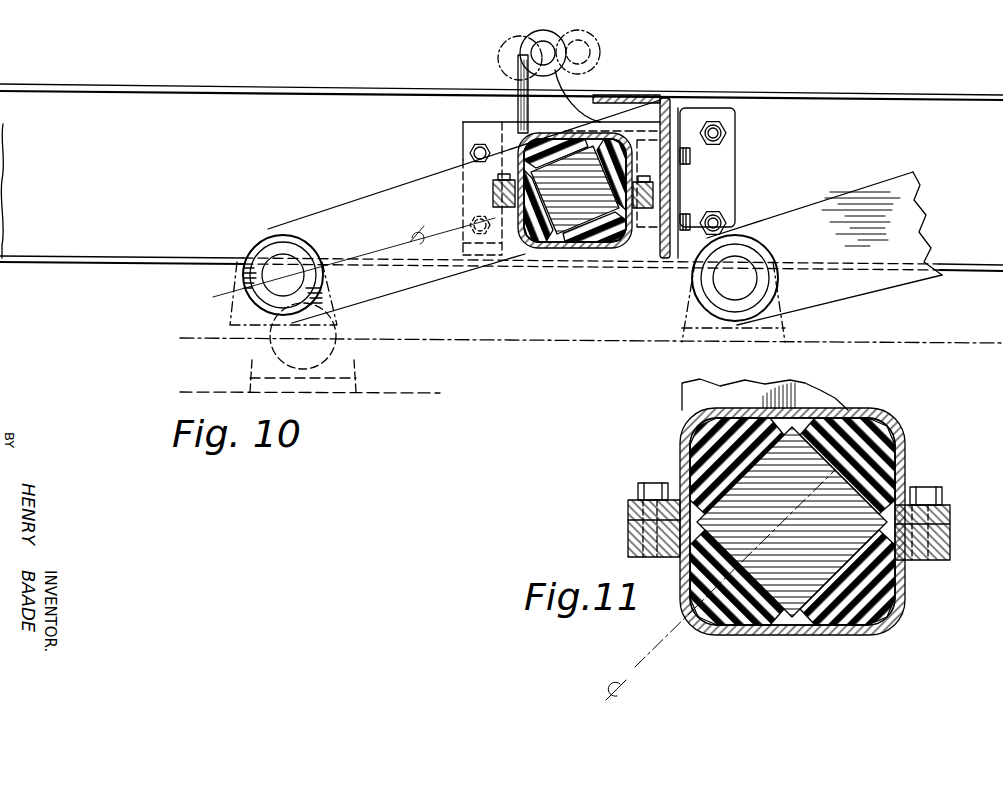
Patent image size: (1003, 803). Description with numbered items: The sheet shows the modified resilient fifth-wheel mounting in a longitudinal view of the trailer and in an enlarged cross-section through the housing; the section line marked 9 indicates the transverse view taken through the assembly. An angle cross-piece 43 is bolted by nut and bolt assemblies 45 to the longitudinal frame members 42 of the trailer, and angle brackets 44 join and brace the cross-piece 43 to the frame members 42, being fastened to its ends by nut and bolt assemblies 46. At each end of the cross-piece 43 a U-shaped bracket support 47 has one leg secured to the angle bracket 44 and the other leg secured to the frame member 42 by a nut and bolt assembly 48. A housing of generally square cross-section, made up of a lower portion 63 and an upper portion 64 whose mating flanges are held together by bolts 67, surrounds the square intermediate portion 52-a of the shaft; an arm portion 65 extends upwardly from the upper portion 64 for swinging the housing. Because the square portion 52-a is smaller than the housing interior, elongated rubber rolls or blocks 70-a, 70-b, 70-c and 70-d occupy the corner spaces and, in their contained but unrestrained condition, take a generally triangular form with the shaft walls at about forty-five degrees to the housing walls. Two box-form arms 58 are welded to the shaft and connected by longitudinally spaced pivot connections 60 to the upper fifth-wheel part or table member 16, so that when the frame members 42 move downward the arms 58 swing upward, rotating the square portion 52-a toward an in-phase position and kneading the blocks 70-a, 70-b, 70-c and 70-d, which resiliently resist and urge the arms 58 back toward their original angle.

In FIG. 10, the longitudinal frame member 42 is at (157, 99).
In FIG. 10, the table member 16 is at (365, 340).
In FIG. 10, the pivot connection 60 is at (243, 277).
In FIG. 10, the arm 58 is at (338, 212).
In FIG. 10, the section line 9- 9 is at (465, 153).
In FIG. 10, the U-shaped bracket support 47 is at (467, 128).
In FIG. 10, the nut and bolt assembly 48 is at (470, 151).
In FIG. 10, the angle cross-piece 43 is at (652, 98).
In FIG. 10, the angle bracket 44 is at (736, 177).
In FIG. 10, the nut and bolt assembly 45 is at (726, 136).
In FIG. 10, the nut and bolt assembly 46 is at (690, 157).
In FIG. 10, the bolt 67 is at (653, 181).
In FIG. 11, the bolt 67 is at (641, 488).
In FIG. 10, the arm portion 65 is at (517, 110).
In FIG. 11, the arm portion 65 is at (688, 401).
In FIG. 10, the lower portion of housing 63 is at (618, 244).
In FIG. 11, the lower portion of housing 63 is at (898, 602).
In FIG. 10, the upper portion of housing 64 is at (630, 160).
In FIG. 11, the upper portion of housing 64 is at (900, 462).
In FIG. 10, the rubber roll or block 70-a is at (580, 125).
In FIG. 11, the rubber roll or block 70-a is at (700, 440).
In FIG. 10, the rubber roll or block 70-b is at (640, 150).
In FIG. 11, the rubber roll or block 70-b is at (862, 437).
In FIG. 10, the rubber roll or block 70-c is at (605, 245).
In FIG. 11, the rubber roll or block 70-c is at (840, 618).
In FIG. 10, the rubber roll or block 70-d is at (525, 240).
In FIG. 11, the rubber roll or block 70-d is at (718, 622).
In FIG. 10, the square intermediate portion of shaft 52-a is at (558, 222).
In FIG. 11, the square intermediate portion of shaft 52-a is at (770, 618).